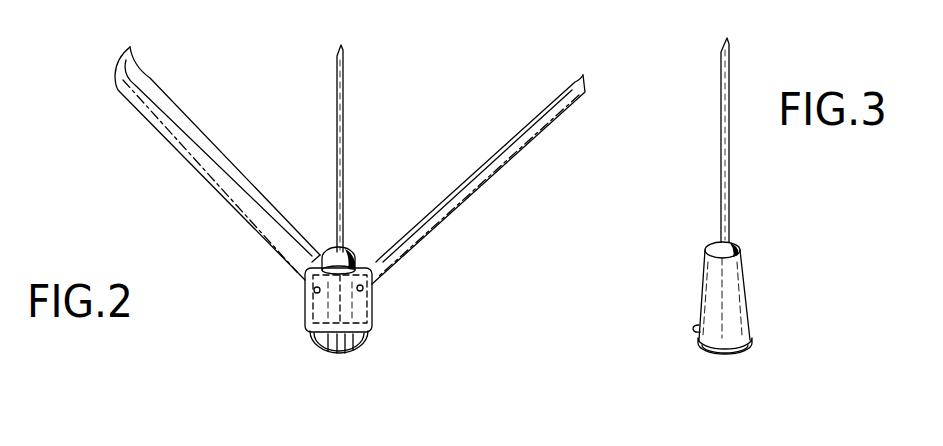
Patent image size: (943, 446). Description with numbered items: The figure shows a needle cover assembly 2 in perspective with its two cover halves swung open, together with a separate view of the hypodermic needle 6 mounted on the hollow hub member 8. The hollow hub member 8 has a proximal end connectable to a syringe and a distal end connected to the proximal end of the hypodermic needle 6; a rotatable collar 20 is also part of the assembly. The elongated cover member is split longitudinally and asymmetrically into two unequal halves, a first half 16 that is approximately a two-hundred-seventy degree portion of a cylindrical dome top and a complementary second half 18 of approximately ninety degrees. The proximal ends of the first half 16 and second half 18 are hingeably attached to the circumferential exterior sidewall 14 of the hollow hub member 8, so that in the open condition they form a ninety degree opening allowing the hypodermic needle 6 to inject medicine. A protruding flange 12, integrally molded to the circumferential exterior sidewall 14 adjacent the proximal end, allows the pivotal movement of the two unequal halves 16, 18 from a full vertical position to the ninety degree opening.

In FIG. 2, the needle cover assembly 2 is at (486, 46).
In FIG. 2, the hypodermic needle 6 is at (343, 140).
In FIG. 3, the hypodermic needle 6 is at (720, 128).
In FIG. 2, the hollow hub member 8 is at (316, 356).
In FIG. 3, the hollow hub member 8 is at (706, 365).
In FIG. 3, the protruding flange 12 is at (693, 327).
In FIG. 3, the circumferential exterior sidewall 14 is at (727, 328).
In FIG. 2, the first half 16 is at (167, 143).
In FIG. 2, the second half 18 is at (503, 168).
In FIG. 2, the rotatable collar 20 is at (384, 306).